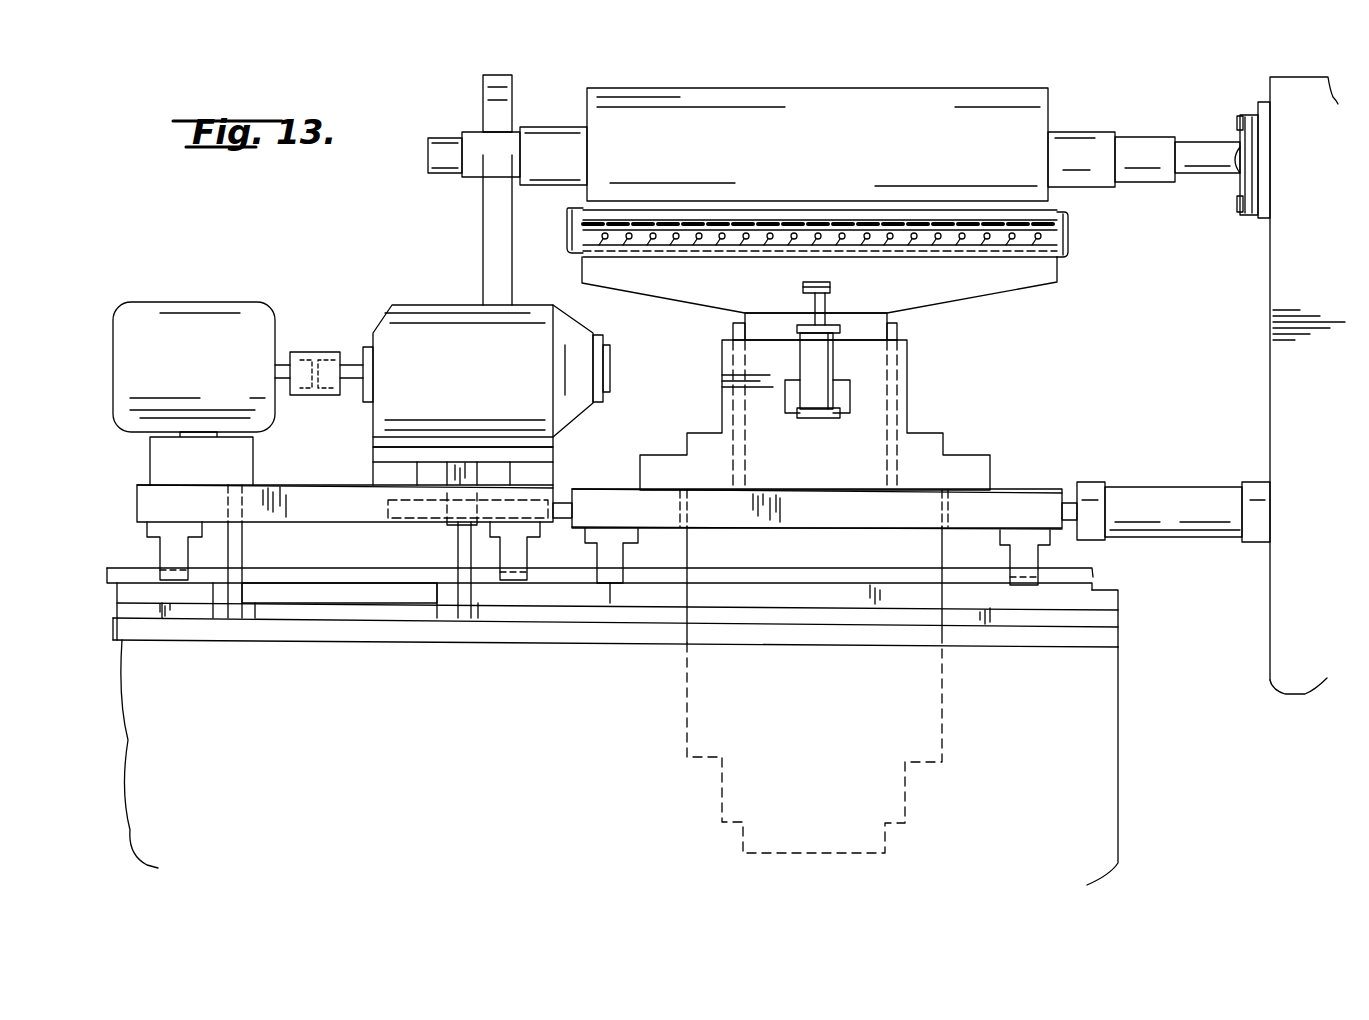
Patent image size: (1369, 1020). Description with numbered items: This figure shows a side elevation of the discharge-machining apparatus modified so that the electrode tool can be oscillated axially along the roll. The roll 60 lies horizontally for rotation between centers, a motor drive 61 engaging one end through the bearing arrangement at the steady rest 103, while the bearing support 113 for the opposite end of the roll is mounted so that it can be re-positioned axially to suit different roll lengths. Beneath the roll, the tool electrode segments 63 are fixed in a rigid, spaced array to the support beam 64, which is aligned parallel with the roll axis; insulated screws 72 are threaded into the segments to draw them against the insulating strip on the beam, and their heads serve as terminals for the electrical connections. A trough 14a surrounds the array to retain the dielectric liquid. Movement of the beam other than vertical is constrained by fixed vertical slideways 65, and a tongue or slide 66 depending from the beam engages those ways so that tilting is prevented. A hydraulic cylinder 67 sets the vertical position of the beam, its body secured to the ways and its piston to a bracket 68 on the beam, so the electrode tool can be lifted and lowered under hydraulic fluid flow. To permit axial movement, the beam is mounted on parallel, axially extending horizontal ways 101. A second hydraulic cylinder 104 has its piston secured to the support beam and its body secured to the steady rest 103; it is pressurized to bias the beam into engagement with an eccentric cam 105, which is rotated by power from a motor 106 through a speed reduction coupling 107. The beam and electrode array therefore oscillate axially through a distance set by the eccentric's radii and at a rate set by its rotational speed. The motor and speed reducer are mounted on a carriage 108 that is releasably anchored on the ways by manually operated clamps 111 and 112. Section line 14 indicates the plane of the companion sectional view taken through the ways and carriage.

The section line 14 is at (549, 132).
The bracket 14a is at (570, 216).
The roll 60 is at (863, 98).
The motor drive 61 is at (1258, 110).
The tool electrode segments 63 is at (793, 229).
The support beam 64 is at (700, 246).
The vertical slideways 65 is at (733, 330).
The tongue or slide 66 is at (763, 323).
The hydraulic cylinder 67 is at (805, 392).
The bracket 68 is at (887, 311).
The insulated screws 72 is at (962, 241).
The horizontal ways 101 is at (850, 548).
The steady rest 103 is at (1270, 373).
The hydraulic cylinder 104 is at (1175, 495).
The eccentric cam 105 is at (560, 478).
The motor 106 is at (207, 323).
The speed reduction coupling 107 is at (455, 283).
The carriage 108 is at (330, 462).
The clamp 111 is at (250, 558).
The clamp 112 is at (450, 546).
The bearing support 113 is at (483, 208).